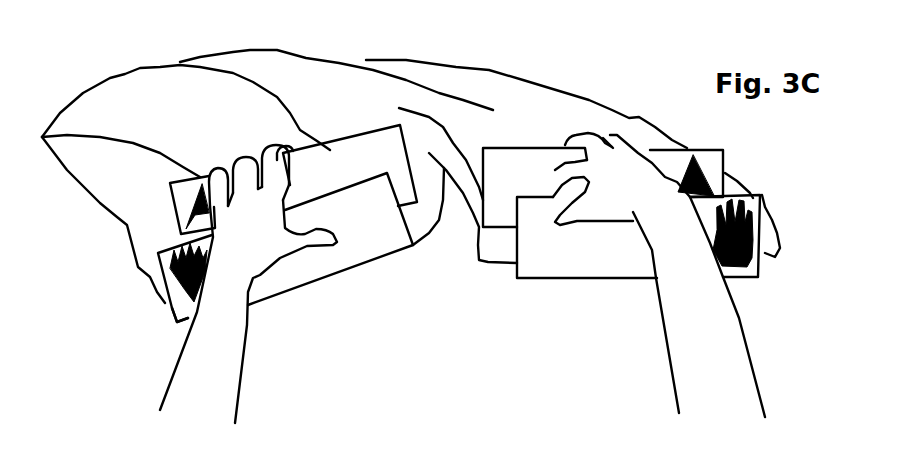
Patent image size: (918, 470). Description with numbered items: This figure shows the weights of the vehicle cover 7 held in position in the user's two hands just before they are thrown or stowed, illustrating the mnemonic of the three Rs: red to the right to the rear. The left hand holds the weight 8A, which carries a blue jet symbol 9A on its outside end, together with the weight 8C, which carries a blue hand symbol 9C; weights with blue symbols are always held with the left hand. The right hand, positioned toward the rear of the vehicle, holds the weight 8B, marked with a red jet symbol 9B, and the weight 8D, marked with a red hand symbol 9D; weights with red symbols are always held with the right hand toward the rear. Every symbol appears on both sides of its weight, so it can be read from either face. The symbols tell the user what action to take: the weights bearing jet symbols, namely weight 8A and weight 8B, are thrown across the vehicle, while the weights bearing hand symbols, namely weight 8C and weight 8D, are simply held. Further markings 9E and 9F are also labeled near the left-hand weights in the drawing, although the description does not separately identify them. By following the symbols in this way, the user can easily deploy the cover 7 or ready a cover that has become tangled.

The cover 7 is at (458, 78).
The weight 8A is at (339, 160).
The weight 8B is at (518, 162).
The weight 8C is at (356, 260).
The weight 8D is at (533, 247).
The blue jet symbol 9A is at (190, 208).
The red jet symbol 9B is at (686, 170).
The blue hand symbol 9C is at (163, 288).
The red hand symbol 9D is at (760, 251).
The symbol card 9E is at (158, 252).
The symbol card edge 9F is at (175, 307).